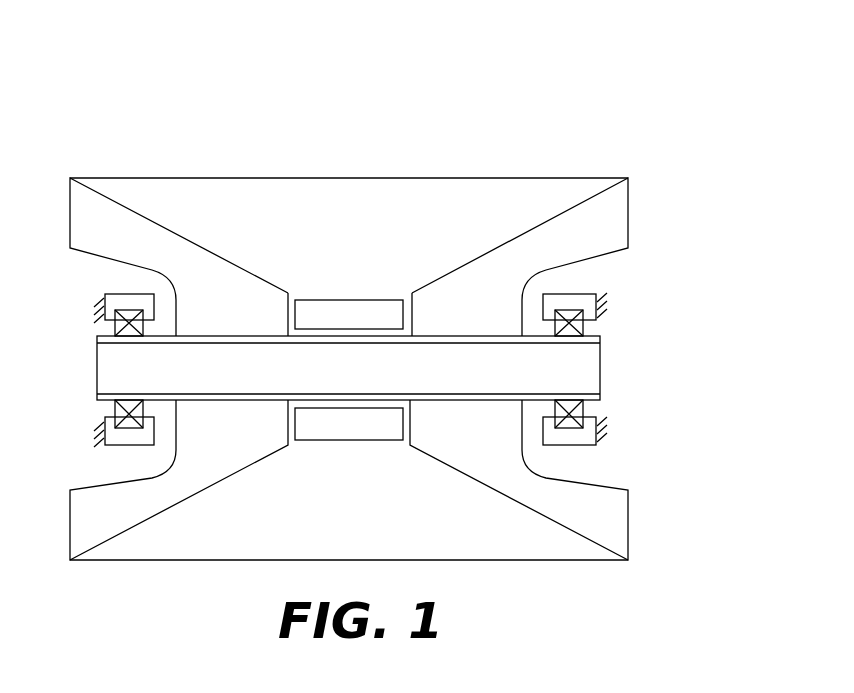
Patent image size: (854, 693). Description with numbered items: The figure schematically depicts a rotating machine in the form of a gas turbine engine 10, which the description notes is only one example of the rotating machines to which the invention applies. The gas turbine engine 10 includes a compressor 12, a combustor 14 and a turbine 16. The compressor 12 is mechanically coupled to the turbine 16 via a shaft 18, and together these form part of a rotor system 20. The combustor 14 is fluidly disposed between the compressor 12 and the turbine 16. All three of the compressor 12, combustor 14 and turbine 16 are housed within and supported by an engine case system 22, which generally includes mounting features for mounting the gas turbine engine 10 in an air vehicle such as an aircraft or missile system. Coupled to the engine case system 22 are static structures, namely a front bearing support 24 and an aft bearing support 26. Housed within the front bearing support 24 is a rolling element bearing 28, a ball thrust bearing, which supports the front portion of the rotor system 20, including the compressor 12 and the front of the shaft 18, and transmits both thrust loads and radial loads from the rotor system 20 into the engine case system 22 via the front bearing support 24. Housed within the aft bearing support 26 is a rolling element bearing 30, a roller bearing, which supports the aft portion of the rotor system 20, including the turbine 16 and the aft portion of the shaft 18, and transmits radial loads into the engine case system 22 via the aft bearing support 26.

The gas turbine engine 10 is at (404, 337).
The compressor 12 is at (180, 237).
The combustor 14 is at (383, 298).
The turbine 16 is at (525, 230).
The shaft 18 is at (290, 293).
The rotor system 20 is at (697, 353).
The engine case system 22 is at (525, 561).
The front bearing support 24 is at (104, 293).
The aft bearing support 26 is at (570, 293).
The rolling element bearing 28 is at (112, 410).
The rolling element bearing 30 is at (585, 412).